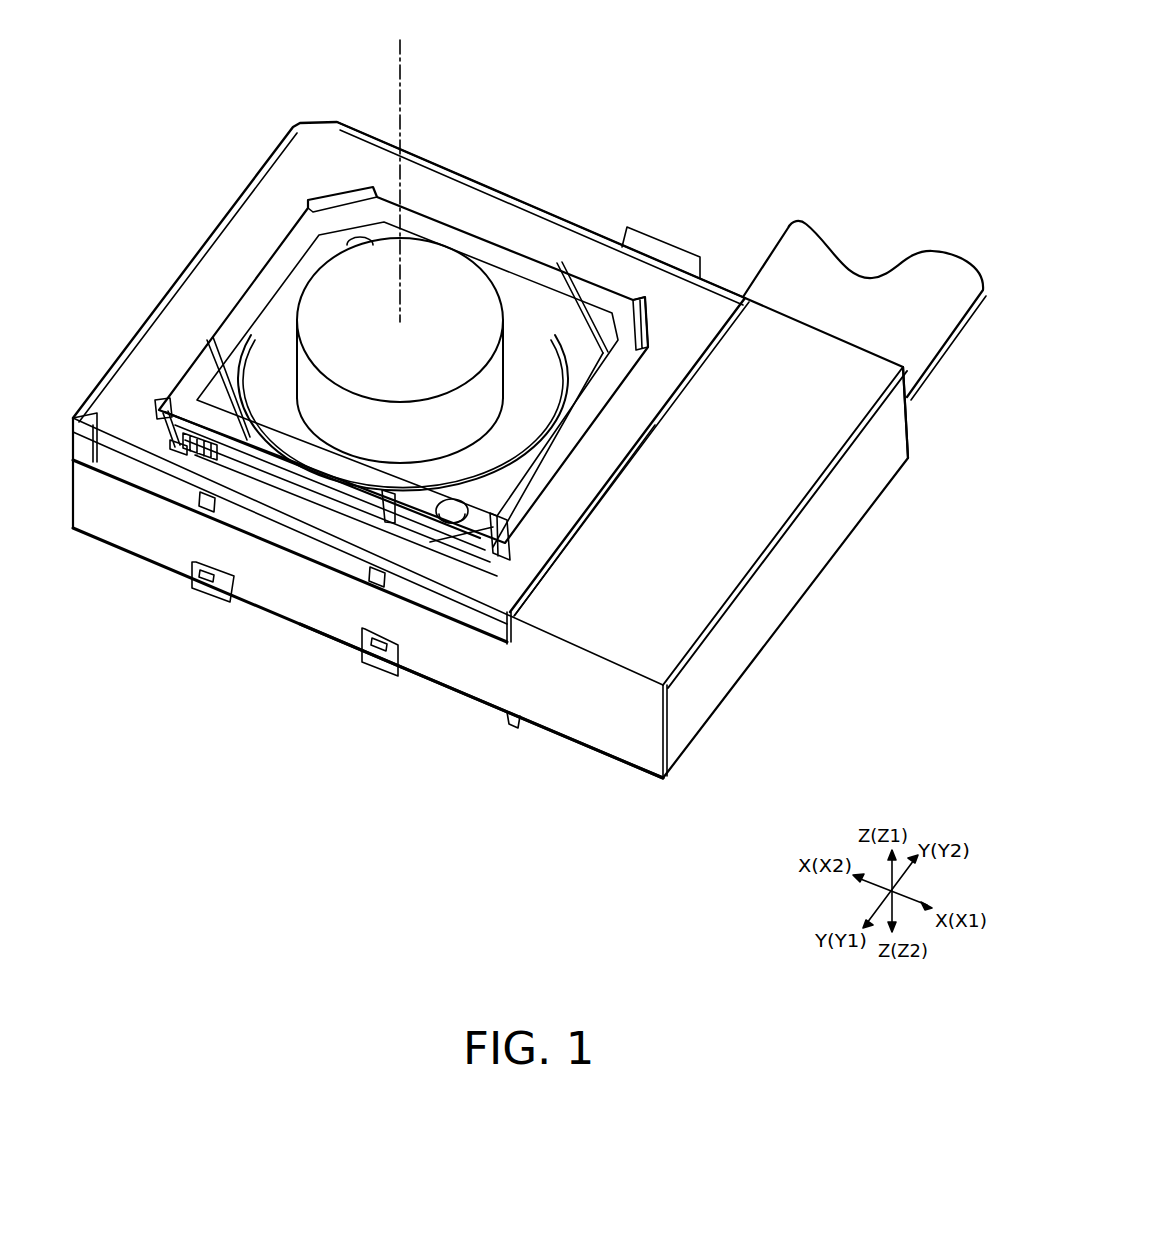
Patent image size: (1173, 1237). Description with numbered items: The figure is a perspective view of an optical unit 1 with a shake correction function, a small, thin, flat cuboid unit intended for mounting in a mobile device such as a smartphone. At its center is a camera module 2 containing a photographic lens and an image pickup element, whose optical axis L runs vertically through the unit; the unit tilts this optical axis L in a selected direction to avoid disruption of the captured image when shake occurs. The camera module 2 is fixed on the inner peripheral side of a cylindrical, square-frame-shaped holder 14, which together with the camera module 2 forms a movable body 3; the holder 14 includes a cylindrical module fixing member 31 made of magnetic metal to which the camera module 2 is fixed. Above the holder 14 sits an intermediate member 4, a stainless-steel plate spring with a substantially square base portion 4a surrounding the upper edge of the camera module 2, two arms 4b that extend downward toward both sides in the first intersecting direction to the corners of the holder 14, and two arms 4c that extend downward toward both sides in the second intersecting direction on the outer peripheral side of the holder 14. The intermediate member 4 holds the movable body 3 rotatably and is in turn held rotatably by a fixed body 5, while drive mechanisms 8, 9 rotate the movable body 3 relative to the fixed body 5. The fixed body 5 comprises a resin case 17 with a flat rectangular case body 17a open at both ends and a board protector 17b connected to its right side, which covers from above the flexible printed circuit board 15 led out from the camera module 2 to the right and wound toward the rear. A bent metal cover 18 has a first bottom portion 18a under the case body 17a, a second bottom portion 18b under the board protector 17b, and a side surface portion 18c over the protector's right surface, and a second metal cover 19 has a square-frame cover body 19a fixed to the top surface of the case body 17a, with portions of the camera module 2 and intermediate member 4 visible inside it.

The optical unit with a shake correction function 1 is at (825, 71).
The optical axis L is at (406, 46).
The camera module 2 is at (406, 292).
The movable body 3 is at (450, 243).
The intermediate member 4 is at (403, 339).
The base portion 4a is at (422, 215).
The arms 4b is at (494, 550).
The arms 4c is at (645, 333).
The fixed body 5 is at (290, 627).
The drive mechanism 8 is at (168, 270).
The drive mechanism 9 is at (617, 190).
The holder 14 is at (415, 336).
The module fixing member 31 is at (512, 297).
The flexible printed circuit board 15 is at (773, 243).
The case 17 is at (487, 572).
The case body 17a is at (83, 538).
The board protector 17b is at (813, 323).
The cover 18 is at (368, 653).
The first bottom portion 18a is at (452, 703).
The second bottom portion 18b is at (587, 749).
The side surface portion 18c is at (910, 438).
The cover 19 is at (464, 213).
The cover body 19a is at (242, 197).